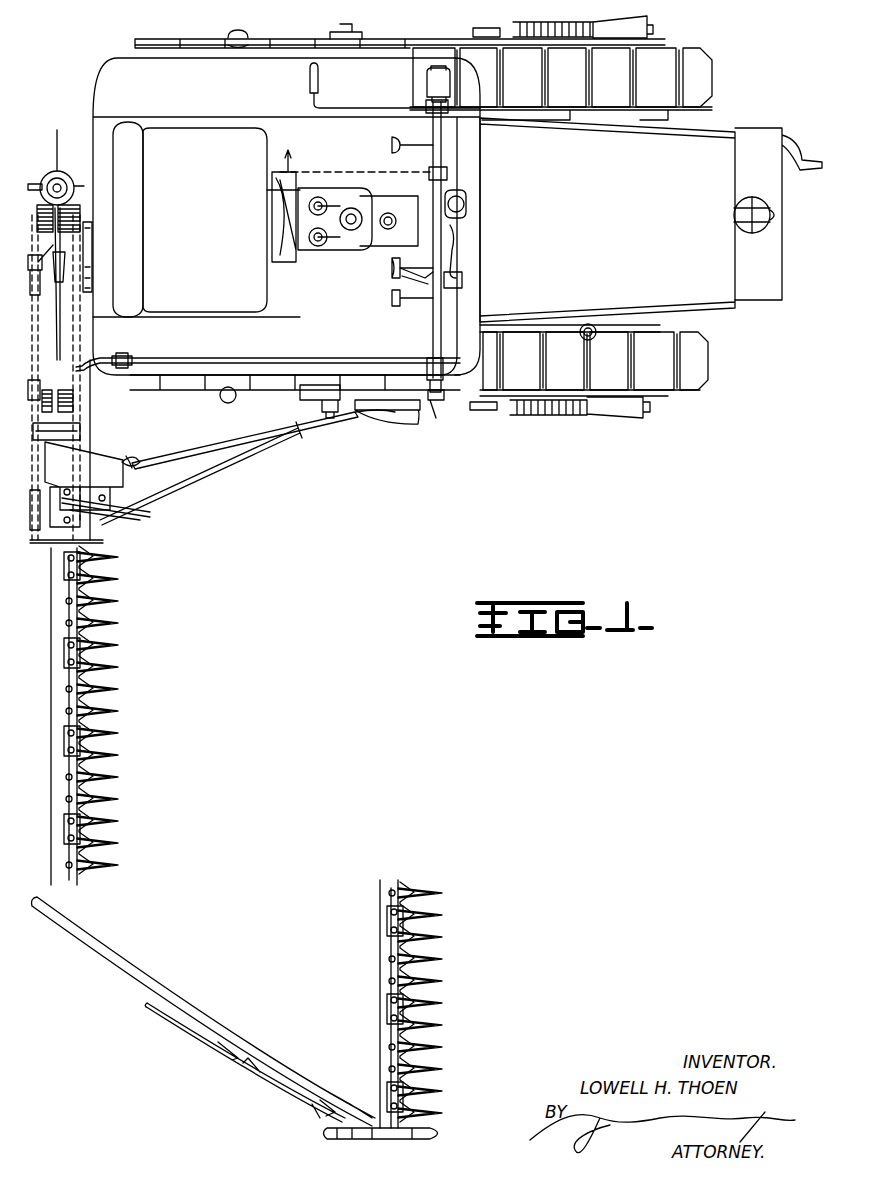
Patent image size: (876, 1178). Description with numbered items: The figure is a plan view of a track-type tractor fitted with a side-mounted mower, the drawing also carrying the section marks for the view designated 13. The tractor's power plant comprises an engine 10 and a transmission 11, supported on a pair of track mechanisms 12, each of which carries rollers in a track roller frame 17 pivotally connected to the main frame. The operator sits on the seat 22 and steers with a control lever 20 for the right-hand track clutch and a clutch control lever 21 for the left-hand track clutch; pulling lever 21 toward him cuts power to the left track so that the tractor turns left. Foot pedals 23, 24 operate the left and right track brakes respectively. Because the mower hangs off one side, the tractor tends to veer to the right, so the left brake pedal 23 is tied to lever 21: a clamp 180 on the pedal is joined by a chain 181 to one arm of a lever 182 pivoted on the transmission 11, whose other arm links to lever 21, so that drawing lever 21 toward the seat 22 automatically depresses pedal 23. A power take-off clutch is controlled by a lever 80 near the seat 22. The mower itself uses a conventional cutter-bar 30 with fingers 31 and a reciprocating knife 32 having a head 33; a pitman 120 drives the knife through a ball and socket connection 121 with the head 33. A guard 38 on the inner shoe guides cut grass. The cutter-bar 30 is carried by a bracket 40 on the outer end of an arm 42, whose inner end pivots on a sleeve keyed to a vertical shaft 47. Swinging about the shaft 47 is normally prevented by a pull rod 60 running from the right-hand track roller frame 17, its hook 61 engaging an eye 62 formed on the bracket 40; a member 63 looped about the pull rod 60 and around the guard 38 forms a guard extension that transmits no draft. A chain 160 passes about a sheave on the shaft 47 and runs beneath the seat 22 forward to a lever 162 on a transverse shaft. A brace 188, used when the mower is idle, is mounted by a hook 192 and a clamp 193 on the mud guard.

The engine 10 is at (628, 221).
The transmission 11 is at (313, 252).
The track mechanisms 12 is at (712, 76).
The section line 13 is at (416, 13).
The track roller frame 17 is at (432, 398).
The control lever 20 is at (350, 252).
The clutch control lever 21 is at (360, 200).
The seat 22 is at (222, 236).
The foot pedal 23 is at (392, 268).
The foot pedal 24 is at (392, 300).
The cutter-bar 30 is at (52, 848).
The fingers 31 is at (98, 852).
The knife 32 is at (98, 862).
The head 33 is at (103, 541).
The guard 38 is at (87, 513).
The bracket 40 is at (98, 455).
The arm 42 is at (62, 350).
The vertical shaft 47 is at (55, 170).
The pull rod 60 is at (188, 445).
The hook 61 is at (140, 464).
The eye 62 is at (130, 458).
The member 63 is at (240, 468).
The lever 80 is at (262, 190).
The pitman 120 is at (90, 400).
The ball and socket connection 121 is at (90, 497).
The chain 160 is at (312, 172).
The lever 162 is at (447, 170).
The clamp 180 is at (398, 285).
The chain 181 is at (462, 292).
The lever 182 is at (458, 250).
The brace 188 is at (302, 360).
The hook 192 is at (437, 360).
The clamp 193 is at (122, 356).